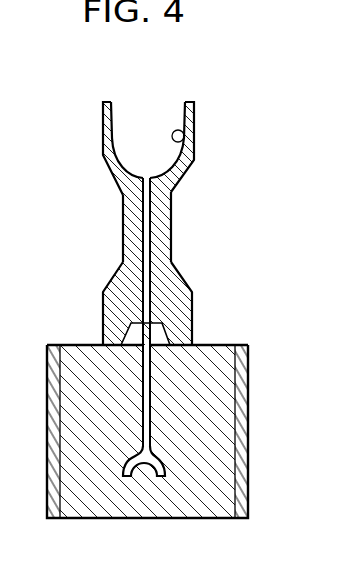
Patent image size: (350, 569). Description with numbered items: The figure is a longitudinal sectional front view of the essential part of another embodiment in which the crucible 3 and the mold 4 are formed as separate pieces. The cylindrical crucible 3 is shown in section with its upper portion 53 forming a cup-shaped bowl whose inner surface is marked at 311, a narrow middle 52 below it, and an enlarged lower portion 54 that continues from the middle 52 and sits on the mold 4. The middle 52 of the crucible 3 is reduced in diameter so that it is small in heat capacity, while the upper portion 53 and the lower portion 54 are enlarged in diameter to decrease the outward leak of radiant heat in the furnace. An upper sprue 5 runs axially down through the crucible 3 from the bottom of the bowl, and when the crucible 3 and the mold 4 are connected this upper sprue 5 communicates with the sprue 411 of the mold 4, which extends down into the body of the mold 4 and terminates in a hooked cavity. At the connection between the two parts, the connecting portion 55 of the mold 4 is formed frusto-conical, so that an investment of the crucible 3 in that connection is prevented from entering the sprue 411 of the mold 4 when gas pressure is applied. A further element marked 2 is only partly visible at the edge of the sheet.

The electrode assembly 2 is at (345, 311).
The crucible 3 is at (180, 254).
The mold 4 is at (226, 443).
The upper sprue 5 is at (172, 202).
The middle 52 is at (123, 219).
The upper portion 53 is at (106, 153).
The lower portion 54 is at (102, 303).
The connecting portion 55 is at (192, 310).
The inner surface 311 is at (190, 147).
The sprue 411 is at (145, 390).